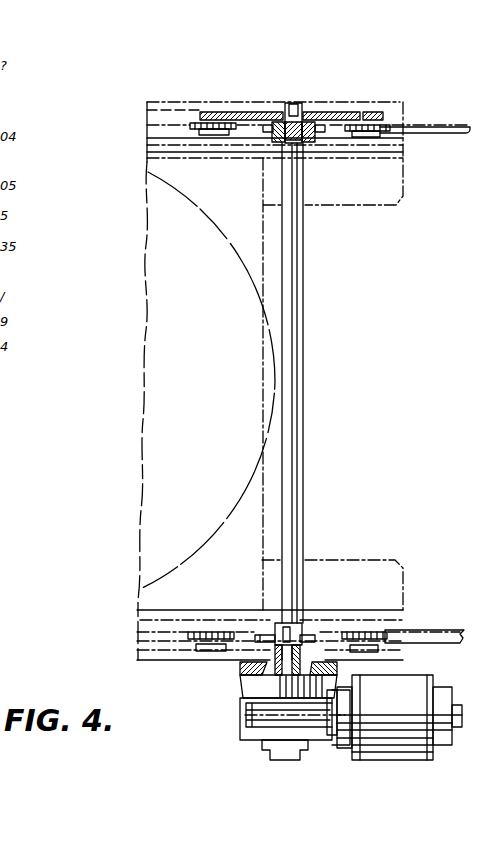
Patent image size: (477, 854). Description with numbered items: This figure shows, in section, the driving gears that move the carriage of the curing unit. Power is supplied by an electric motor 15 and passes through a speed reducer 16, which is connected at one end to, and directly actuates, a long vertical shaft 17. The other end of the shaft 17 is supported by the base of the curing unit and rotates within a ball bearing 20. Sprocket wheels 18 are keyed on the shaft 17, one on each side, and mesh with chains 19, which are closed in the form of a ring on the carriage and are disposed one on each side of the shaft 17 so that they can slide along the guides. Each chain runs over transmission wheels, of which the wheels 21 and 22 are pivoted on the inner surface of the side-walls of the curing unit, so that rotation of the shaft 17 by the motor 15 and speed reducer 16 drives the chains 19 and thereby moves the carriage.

The electric motor 15 is at (367, 750).
The speed reducer 16 is at (250, 712).
The shaft 17 is at (303, 297).
The sprocket wheels 18 is at (320, 110).
The chains 19 is at (413, 126).
The ball bearing 20 is at (297, 103).
The transmission wheel 21 is at (201, 123).
The transmission wheel 22 is at (368, 125).